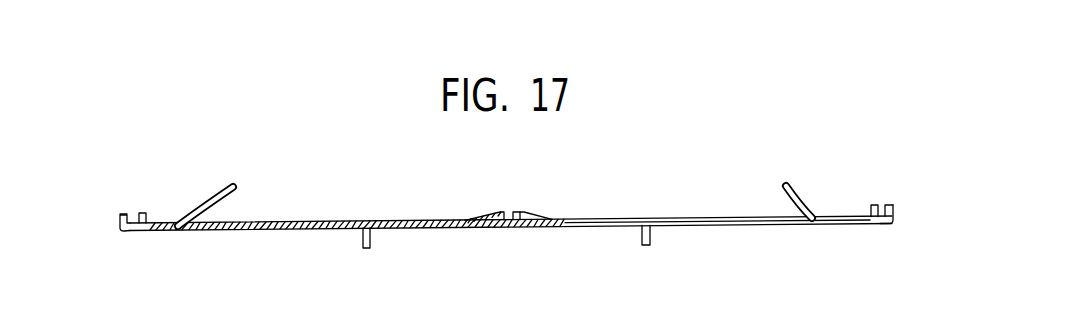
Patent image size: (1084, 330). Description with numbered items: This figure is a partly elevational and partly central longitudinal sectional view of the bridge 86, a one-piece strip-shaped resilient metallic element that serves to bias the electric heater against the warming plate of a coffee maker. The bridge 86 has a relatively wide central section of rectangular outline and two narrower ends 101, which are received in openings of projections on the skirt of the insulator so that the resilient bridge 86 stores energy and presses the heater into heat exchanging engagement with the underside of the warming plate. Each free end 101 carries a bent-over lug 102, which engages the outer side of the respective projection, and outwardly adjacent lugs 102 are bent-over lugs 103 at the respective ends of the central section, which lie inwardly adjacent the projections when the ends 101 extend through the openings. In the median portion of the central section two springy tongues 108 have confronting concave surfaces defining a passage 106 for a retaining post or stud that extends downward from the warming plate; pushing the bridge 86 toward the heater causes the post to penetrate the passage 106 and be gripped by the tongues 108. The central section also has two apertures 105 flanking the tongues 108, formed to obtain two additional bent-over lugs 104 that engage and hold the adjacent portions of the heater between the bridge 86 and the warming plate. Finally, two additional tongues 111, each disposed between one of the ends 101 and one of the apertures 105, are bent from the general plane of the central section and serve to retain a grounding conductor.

The bridge 86 is at (351, 197).
The ends 101 is at (131, 233).
The bent-over lugs 102 is at (125, 213).
The bent-over lugs 103 is at (147, 212).
The bent-over lugs 104 is at (371, 237).
The apertures 105 is at (351, 231).
The passage 106 is at (508, 211).
The springy tongues 108 is at (522, 211).
The additional tongues 111 is at (238, 188).